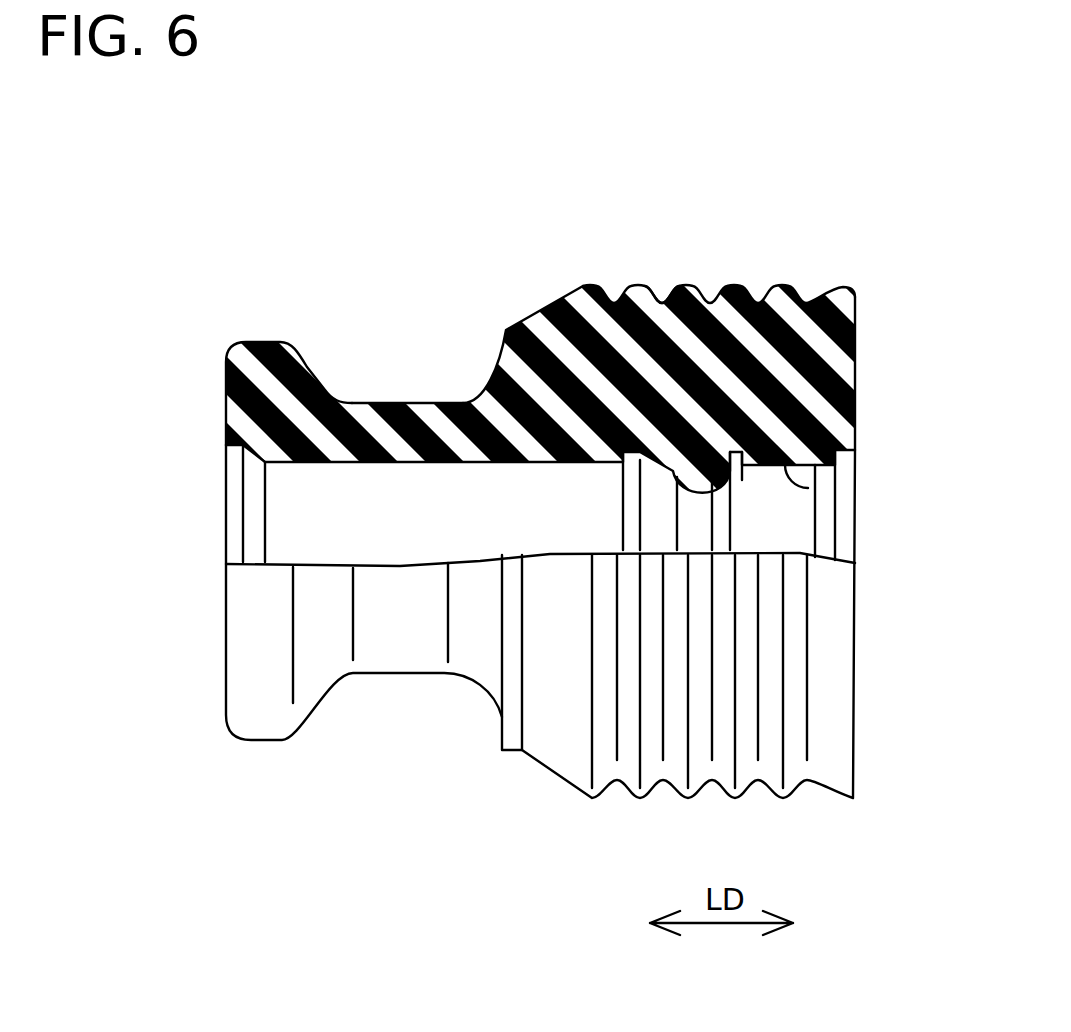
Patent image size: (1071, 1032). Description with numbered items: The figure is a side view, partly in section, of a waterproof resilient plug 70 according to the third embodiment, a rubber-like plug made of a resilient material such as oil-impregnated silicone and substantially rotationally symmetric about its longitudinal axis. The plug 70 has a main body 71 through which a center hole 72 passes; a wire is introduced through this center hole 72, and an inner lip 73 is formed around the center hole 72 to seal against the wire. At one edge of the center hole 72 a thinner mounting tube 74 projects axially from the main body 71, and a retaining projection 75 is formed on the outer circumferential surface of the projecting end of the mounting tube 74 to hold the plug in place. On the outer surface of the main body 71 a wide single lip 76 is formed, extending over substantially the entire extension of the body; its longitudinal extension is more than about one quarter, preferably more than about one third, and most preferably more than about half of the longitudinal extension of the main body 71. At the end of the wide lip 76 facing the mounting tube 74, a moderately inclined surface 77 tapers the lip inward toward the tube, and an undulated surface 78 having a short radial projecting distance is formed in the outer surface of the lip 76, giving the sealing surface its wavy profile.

The waterproof resilient plug 70 is at (521, 224).
The main body 71 is at (848, 356).
The center hole 72 is at (808, 488).
The inner lip 73 is at (740, 470).
The mounting tube 74 is at (432, 413).
The retaining projection 75 is at (250, 360).
The wide single lip 76 is at (700, 293).
The moderately inclined surface 77 is at (547, 310).
The undulated surface 78 is at (658, 303).